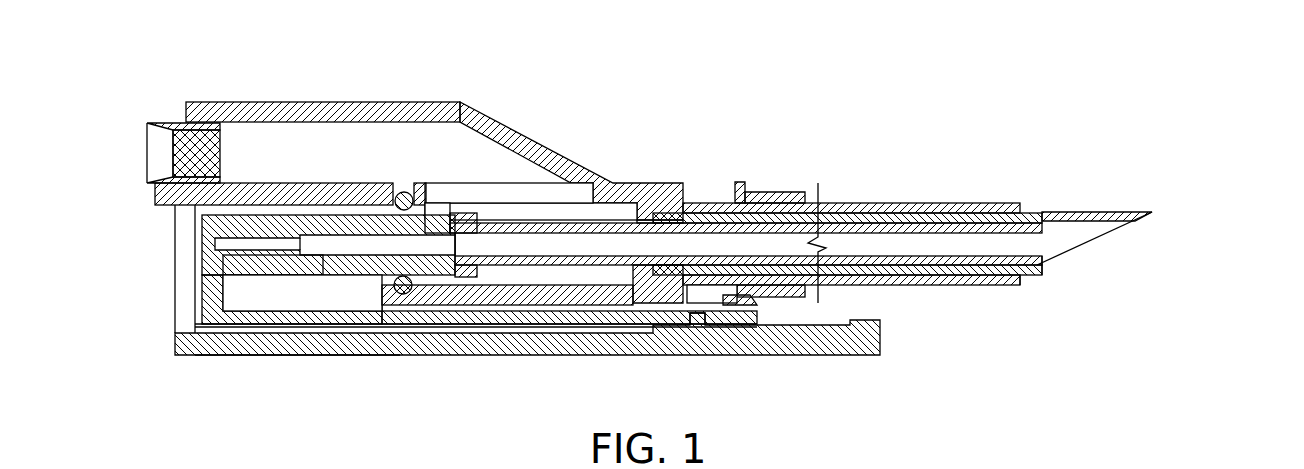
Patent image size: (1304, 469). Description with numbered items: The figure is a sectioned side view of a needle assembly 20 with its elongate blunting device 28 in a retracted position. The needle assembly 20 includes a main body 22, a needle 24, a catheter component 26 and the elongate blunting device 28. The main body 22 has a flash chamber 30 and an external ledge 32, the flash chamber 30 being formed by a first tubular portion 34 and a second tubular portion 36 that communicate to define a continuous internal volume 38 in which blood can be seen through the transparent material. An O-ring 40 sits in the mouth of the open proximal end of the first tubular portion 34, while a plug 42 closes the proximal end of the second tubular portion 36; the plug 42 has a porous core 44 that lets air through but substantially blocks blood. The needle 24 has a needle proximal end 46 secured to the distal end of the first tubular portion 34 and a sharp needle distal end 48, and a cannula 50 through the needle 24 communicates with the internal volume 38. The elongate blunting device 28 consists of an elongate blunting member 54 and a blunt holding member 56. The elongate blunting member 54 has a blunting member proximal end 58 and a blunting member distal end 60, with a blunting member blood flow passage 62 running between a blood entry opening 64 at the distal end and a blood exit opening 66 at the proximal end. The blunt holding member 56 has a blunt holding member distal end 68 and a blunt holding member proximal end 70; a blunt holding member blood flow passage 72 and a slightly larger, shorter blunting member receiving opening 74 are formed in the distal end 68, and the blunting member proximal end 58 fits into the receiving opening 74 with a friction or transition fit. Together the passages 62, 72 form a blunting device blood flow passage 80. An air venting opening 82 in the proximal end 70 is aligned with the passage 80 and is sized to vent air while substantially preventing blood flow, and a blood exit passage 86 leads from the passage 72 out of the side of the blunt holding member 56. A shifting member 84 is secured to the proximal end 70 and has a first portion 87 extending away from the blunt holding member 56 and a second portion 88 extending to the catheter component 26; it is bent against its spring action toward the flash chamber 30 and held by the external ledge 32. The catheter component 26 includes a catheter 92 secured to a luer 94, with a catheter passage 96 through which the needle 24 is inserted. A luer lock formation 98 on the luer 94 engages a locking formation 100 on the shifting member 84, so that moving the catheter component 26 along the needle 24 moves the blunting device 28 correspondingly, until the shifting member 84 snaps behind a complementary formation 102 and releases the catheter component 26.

The needle assembly 20 is at (211, 60).
The main body 22 is at (351, 84).
The needle 24 is at (1054, 212).
The catheter component 26 is at (886, 170).
The elongate blunting device 28 is at (564, 284).
The flash chamber 30 is at (434, 89).
The external ledge 32 is at (806, 352).
The first tubular portion 34 is at (557, 193).
The second tubular portion 36 is at (514, 128).
The internal volume 38 is at (388, 163).
The O-ring 40 is at (398, 296).
The plug 42 is at (163, 124).
The core 44 is at (225, 152).
The needle proximal end 46 is at (692, 203).
The sharp needle distal end 48 is at (1126, 210).
The cannula 50 is at (1106, 229).
The elongate blunting member 54 is at (925, 268).
The blunt holding member 56 is at (355, 262).
The blunting member proximal end 58 is at (487, 306).
The blunting member distal end 60 is at (1058, 260).
The blunting member blood flow passage 62 is at (1001, 278).
The blunting member blood entry opening 64 is at (1046, 241).
The blunting member blood exit opening 66 is at (458, 246).
The blunt holding member distal end 68 is at (453, 278).
The blunt holding member proximal end 70 is at (238, 264).
The blunt holding member blood flow passage 72 is at (312, 246).
The blunting member receiving opening 74 is at (478, 227).
The blunting device blood flow passage 80 is at (592, 242).
The air venting opening 82 is at (217, 244).
The shifting member 84 is at (293, 356).
The blood exit passage 86 is at (433, 220).
The first portion 87 is at (210, 296).
The second portion 88 is at (358, 329).
The catheter 92 is at (909, 204).
The luer 94 is at (780, 192).
The catheter passage 96 is at (957, 213).
The luer lock formation 98 is at (739, 182).
The locking formation 100 is at (760, 302).
The complementary formation 102 is at (700, 355).